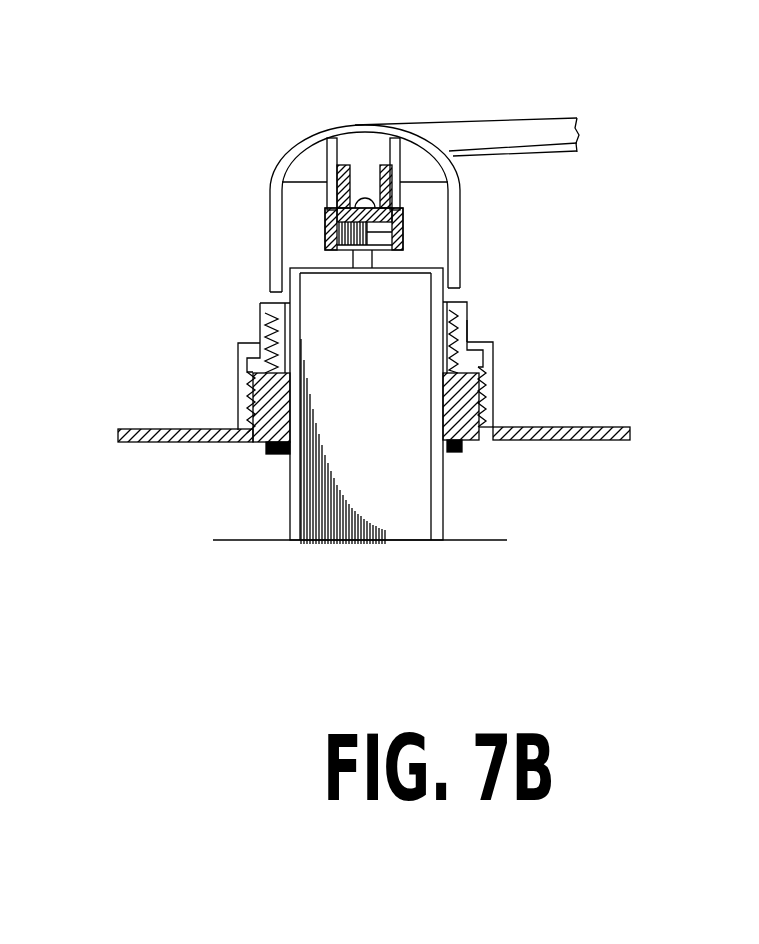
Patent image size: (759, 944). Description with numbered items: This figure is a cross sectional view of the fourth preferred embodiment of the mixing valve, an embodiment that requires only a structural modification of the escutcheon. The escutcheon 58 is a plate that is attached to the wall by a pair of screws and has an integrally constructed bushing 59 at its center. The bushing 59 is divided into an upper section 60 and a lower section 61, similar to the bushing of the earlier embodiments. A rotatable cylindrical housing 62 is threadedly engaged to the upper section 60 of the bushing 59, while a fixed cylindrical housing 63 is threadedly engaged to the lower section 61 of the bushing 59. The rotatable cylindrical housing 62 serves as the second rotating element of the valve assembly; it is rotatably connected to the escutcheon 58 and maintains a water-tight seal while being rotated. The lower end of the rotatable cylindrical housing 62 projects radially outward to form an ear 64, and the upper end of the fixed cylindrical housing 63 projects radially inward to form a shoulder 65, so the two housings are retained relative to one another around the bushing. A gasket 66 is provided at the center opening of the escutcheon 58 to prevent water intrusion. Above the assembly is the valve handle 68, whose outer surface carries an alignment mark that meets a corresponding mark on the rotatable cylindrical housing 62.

The escutcheon 58 is at (155, 429).
The bushing 59 is at (493, 397).
The upper section 60 is at (467, 337).
The lower section 61 is at (253, 390).
The rotatable cylindrical housing 62 is at (467, 301).
The fixed cylindrical housing 63 is at (252, 378).
The ear 64 is at (488, 365).
The shoulder 65 is at (257, 343).
The gasket 66 is at (461, 448).
The valve handle 68 is at (270, 181).